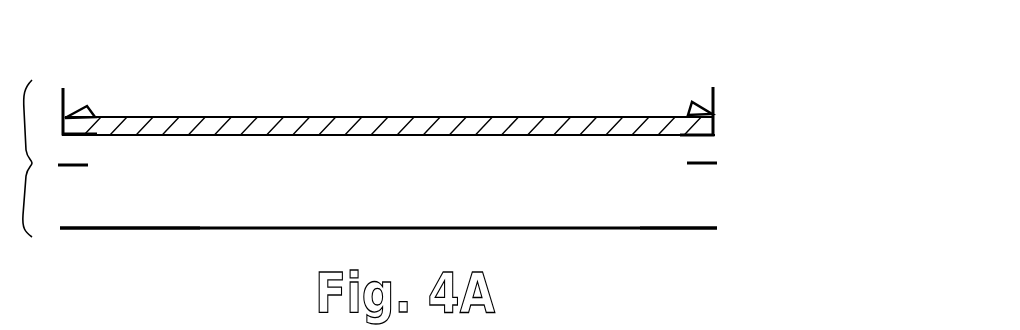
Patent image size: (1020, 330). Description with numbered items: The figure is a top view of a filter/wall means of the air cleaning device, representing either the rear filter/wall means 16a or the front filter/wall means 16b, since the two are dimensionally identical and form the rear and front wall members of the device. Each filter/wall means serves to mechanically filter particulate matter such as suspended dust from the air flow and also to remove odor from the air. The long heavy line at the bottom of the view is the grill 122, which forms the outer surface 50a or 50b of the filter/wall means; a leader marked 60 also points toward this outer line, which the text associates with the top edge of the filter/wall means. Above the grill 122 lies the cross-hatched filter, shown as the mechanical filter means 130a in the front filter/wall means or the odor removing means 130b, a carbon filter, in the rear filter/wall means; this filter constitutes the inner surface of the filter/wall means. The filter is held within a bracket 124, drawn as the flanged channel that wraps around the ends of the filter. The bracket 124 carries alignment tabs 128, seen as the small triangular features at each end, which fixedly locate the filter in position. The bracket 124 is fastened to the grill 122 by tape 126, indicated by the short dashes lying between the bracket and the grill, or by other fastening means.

The rear filter/wall means 16a is at (446, 67).
The front filter/wall means 16b is at (446, 67).
The mechanical filter means 130a is at (477, 117).
The odor removing means 130b is at (388, 88).
The alignment tabs 128 is at (688, 110).
The bracket 124 is at (715, 115).
The tape 126 is at (707, 163).
The grill 122 is at (700, 229).
The outer surface 50a is at (540, 228).
The outer surface 50b is at (388, 251).
The floor 60 is at (142, 228).